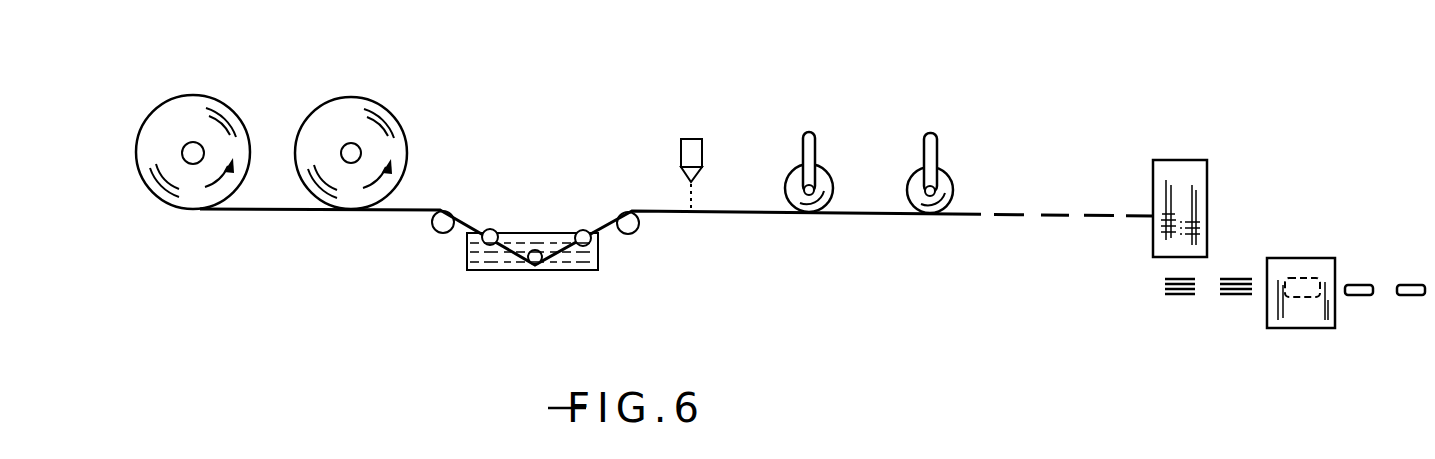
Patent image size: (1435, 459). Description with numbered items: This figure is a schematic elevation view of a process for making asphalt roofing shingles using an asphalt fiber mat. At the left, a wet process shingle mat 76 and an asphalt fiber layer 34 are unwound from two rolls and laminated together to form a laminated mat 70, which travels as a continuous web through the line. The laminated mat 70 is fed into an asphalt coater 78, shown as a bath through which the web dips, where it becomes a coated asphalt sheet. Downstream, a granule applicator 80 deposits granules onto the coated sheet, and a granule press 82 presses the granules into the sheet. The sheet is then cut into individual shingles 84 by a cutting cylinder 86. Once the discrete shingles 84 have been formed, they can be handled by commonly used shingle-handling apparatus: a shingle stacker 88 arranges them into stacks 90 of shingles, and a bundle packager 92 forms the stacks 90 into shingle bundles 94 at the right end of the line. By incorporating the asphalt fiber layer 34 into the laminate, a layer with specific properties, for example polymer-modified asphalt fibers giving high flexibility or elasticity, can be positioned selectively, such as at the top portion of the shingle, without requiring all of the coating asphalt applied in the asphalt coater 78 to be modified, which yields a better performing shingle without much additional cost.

The asphalt fiber layer 34 is at (360, 97).
The laminated mat 70 is at (410, 209).
The wet process shingle mat 76 is at (194, 96).
The asphalt coater 78 is at (467, 255).
The granule applicator 80 is at (684, 139).
The granule press 82 is at (820, 170).
The individual shingles 84 is at (998, 213).
The cutting cylinder 86 is at (950, 170).
The shingle stacker 88 is at (1175, 160).
The stacks 90 is at (1232, 295).
The bundle packager 92 is at (1275, 258).
The shingle bundles 94 is at (1410, 285).